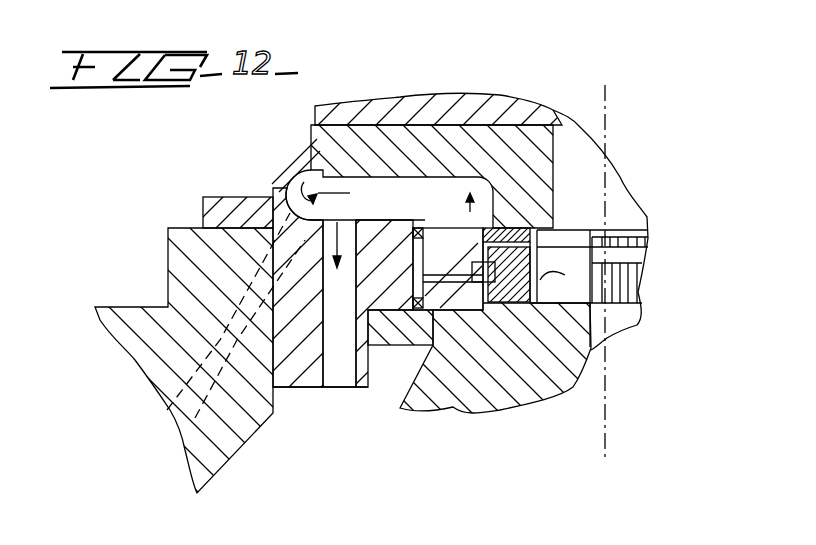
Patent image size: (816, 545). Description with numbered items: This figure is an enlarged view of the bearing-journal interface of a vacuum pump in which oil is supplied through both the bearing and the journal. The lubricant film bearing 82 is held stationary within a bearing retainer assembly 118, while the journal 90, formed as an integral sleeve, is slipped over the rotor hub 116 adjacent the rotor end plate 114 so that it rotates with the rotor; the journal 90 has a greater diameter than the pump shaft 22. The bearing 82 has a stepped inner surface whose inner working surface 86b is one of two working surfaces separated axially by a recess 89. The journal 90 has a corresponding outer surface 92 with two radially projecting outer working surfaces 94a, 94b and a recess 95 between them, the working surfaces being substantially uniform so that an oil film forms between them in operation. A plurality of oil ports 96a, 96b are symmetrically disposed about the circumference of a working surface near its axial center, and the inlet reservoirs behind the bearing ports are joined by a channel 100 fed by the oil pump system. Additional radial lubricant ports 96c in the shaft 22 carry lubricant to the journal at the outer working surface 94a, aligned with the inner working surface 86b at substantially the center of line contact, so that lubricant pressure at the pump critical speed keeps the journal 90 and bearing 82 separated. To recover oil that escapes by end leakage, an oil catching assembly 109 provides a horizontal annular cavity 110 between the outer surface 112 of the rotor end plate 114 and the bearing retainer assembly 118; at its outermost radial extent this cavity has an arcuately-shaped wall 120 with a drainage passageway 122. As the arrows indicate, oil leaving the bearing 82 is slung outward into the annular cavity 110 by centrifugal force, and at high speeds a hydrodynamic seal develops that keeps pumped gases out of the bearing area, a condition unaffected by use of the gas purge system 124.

The pump shaft 22 is at (588, 164).
The lubricant film bearing 82 is at (466, 262).
The inner working surface 86b is at (482, 231).
The recess 89 is at (383, 330).
The journal 90 is at (515, 225).
The outer surface 92 is at (497, 212).
The outer working surface 94a is at (478, 266).
The outer working surface 94b is at (478, 268).
The recess 95 is at (500, 262).
The oil port 96a is at (472, 278).
The oil port 96b is at (510, 230).
The radial lubricant port 96c is at (562, 247).
The channel 100 is at (448, 185).
The oil catching assembly 109 is at (262, 182).
The horizontal annular cavity 110 is at (390, 185).
The outer surface 112 is at (348, 206).
The rotor end plate 114 is at (505, 138).
The rotor hub 116 is at (529, 378).
The bearing retainer assembly 118 is at (381, 346).
The arcuately-shaped wall 120 is at (318, 210).
The drainage passageway 122 is at (333, 372).
The gas purge system 124 is at (195, 370).